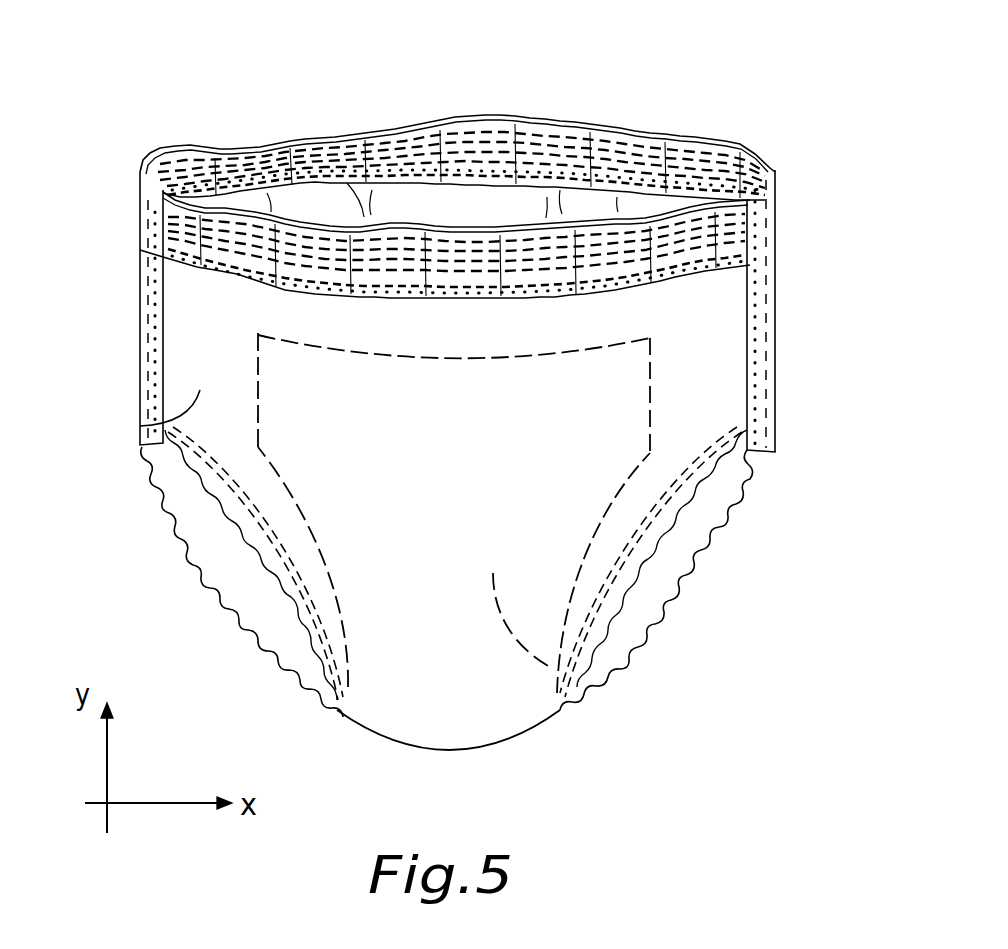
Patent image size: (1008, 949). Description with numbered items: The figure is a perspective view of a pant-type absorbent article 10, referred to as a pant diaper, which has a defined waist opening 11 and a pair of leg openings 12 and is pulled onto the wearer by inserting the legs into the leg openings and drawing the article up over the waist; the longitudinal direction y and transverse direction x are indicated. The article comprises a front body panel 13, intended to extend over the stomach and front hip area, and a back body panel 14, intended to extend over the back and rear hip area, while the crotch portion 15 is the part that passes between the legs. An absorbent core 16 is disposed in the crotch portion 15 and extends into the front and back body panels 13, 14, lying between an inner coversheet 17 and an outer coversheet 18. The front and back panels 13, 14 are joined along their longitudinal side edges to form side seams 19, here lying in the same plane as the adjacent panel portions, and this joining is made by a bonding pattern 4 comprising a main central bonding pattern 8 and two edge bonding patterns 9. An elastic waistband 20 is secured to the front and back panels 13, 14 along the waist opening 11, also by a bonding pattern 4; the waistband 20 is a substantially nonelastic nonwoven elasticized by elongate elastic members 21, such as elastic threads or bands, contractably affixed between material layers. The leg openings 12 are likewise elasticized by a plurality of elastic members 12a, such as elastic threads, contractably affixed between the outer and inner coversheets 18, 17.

The pant-type absorbent article 10 is at (732, 57).
The elastic waistband 20 is at (242, 128).
The elongate elastic members 21 is at (343, 113).
The bonding pattern 4 is at (397, 150).
The back body panel 14 is at (443, 140).
The waist opening 11 is at (509, 123).
The main central bonding pattern 8 is at (593, 150).
The edge bonding patterns 9 is at (627, 150).
The side seams 19 is at (753, 292).
The outer coversheet 18 is at (232, 352).
The inner coversheet 17 is at (449, 220).
The front body panel 13 is at (140, 425).
The leg openings 12 is at (255, 577).
The elastic members 12a is at (725, 545).
The crotch portion 15 is at (355, 703).
The absorbent core 16 is at (550, 663).